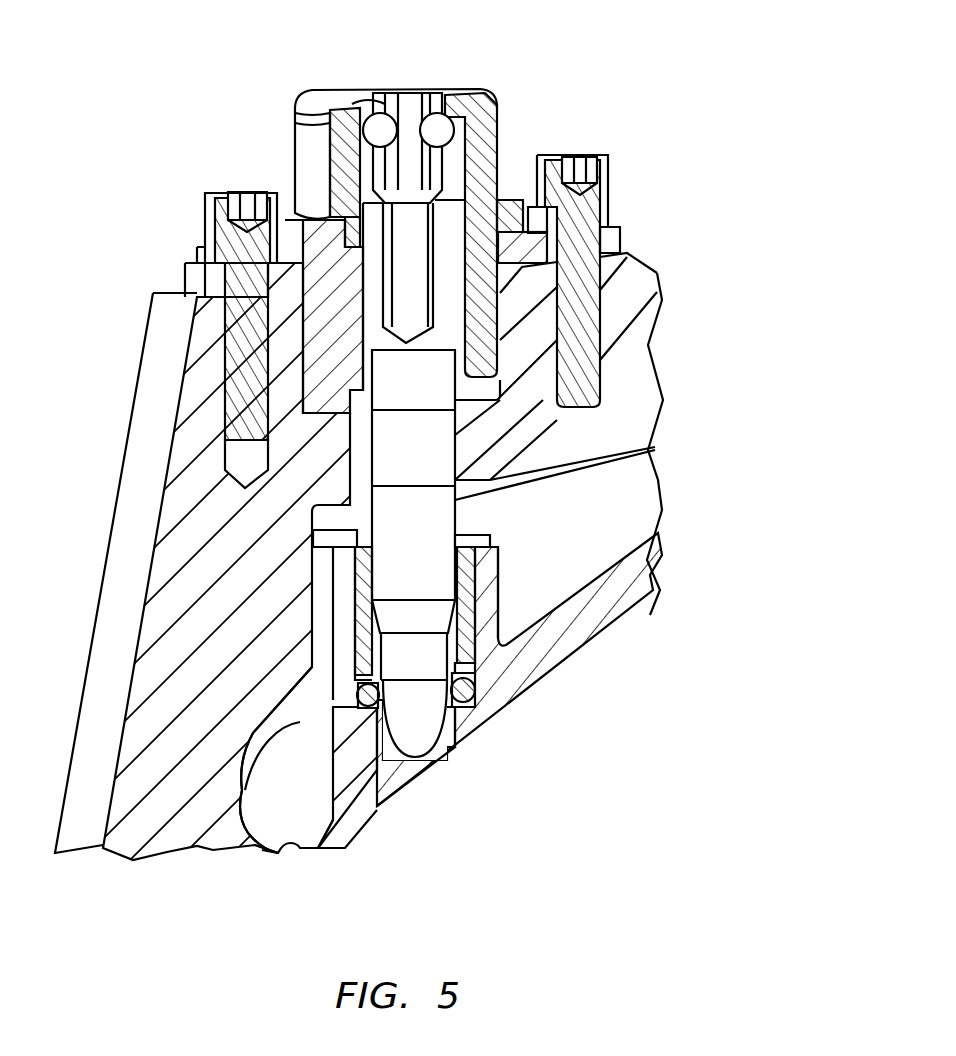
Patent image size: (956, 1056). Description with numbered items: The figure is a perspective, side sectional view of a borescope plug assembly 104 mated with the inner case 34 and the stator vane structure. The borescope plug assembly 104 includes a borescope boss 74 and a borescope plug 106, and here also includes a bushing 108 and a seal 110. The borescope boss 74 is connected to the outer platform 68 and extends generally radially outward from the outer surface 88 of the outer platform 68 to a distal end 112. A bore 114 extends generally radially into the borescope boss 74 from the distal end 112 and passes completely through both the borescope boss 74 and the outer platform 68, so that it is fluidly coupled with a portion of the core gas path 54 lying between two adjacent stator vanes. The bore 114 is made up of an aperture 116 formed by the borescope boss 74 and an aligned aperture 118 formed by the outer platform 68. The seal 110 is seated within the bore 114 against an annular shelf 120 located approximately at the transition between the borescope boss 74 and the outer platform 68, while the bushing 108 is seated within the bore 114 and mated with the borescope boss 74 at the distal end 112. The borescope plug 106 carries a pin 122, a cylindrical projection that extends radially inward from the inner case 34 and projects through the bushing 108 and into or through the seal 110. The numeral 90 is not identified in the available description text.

The inner case 34 is at (660, 284).
The core gas path 54 is at (607, 797).
The outer platform 68 is at (660, 560).
The borescope boss 74 is at (508, 575).
The outer surface 88 is at (283, 855).
The lower edge 90 is at (345, 850).
The borescope plug assembly 104 is at (530, 80).
The borescope plug 106 is at (412, 85).
The bushing 108 is at (498, 533).
The seal 110 is at (470, 695).
The distal end 112 is at (495, 550).
The bore 114 is at (388, 778).
The aperture 116 is at (472, 670).
The aperture 118 is at (457, 748).
The annular shelf 120 is at (353, 708).
The pin 122 is at (428, 752).